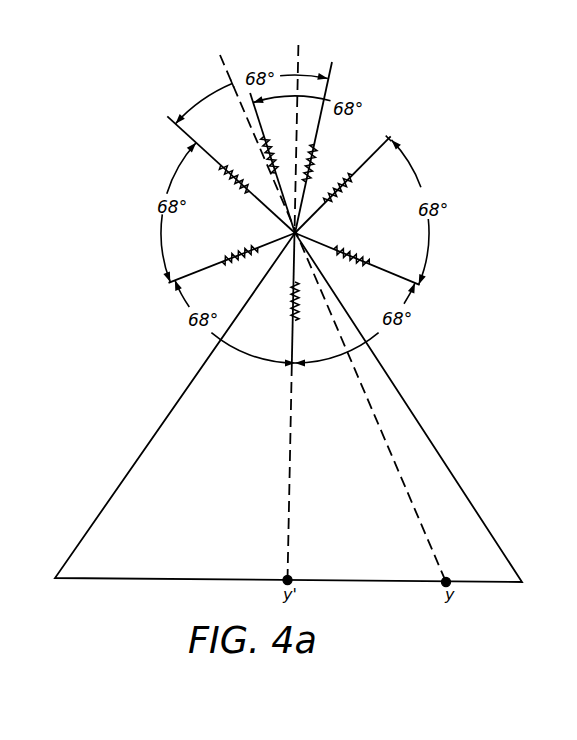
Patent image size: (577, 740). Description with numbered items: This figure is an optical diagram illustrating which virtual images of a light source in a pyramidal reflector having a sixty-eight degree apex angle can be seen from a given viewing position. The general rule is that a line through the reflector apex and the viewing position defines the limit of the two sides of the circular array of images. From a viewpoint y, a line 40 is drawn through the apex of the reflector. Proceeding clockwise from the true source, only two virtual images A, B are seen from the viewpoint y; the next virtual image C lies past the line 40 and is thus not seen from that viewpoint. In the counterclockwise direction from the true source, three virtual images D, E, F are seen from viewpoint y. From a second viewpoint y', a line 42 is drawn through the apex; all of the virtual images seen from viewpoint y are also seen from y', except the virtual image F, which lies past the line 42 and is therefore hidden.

The line 40 is at (335, 321).
The line 42 is at (410, 515).
The virtual image A is at (232, 250).
The virtual image B is at (233, 162).
The virtual image C is at (318, 155).
The virtual image D is at (365, 255).
The virtual image E is at (352, 179).
The virtual image F is at (264, 143).